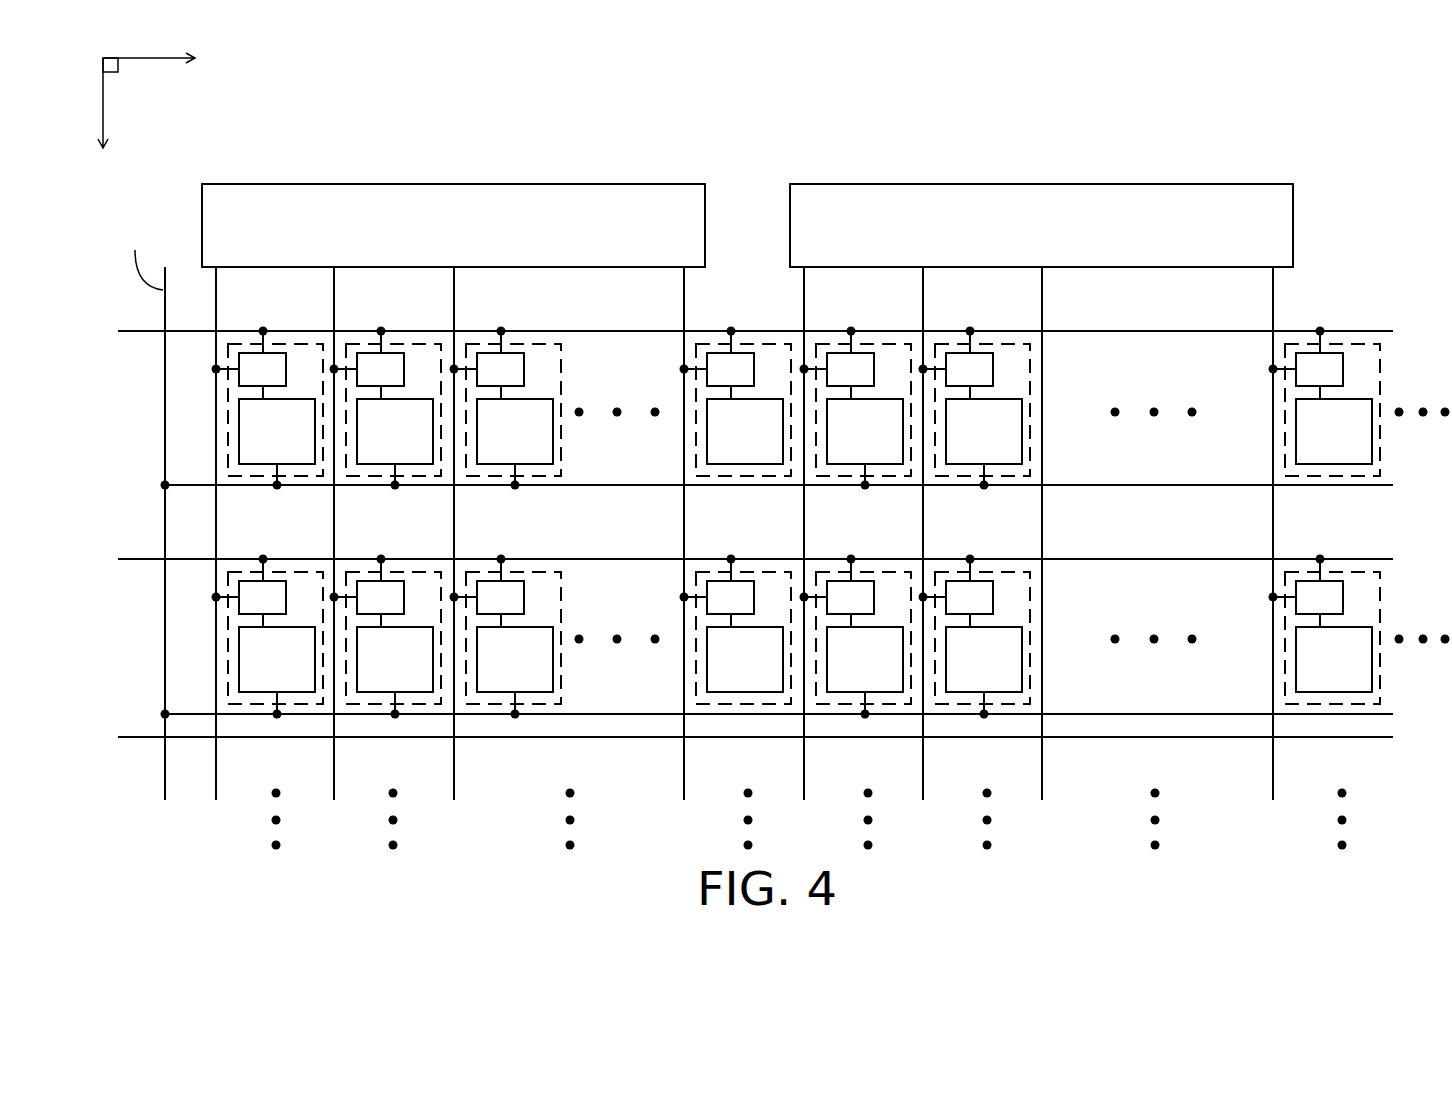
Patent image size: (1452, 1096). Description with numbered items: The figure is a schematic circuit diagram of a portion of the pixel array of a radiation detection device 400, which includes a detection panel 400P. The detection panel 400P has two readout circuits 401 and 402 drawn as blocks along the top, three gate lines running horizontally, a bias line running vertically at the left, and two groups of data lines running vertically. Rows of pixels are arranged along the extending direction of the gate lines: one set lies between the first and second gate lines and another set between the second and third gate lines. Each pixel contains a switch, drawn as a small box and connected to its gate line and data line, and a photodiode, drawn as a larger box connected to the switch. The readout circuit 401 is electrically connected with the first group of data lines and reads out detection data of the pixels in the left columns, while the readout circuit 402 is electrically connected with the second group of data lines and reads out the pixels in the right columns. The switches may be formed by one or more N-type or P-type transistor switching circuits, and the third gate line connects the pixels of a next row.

The radiation detection device 400 is at (1422, 869).
The detection panel 400P is at (1414, 304).
The readout circuit 401 is at (705, 222).
The readout circuit 402 is at (1293, 225).